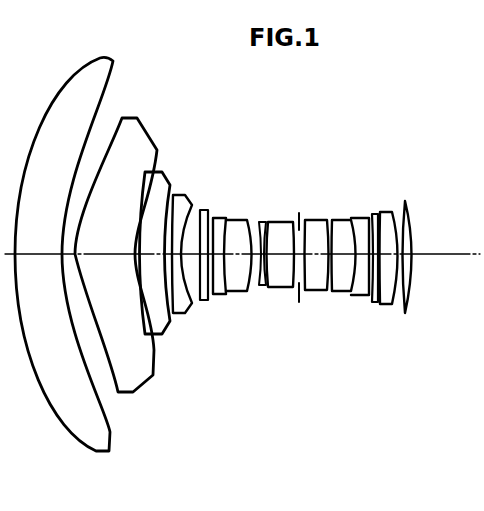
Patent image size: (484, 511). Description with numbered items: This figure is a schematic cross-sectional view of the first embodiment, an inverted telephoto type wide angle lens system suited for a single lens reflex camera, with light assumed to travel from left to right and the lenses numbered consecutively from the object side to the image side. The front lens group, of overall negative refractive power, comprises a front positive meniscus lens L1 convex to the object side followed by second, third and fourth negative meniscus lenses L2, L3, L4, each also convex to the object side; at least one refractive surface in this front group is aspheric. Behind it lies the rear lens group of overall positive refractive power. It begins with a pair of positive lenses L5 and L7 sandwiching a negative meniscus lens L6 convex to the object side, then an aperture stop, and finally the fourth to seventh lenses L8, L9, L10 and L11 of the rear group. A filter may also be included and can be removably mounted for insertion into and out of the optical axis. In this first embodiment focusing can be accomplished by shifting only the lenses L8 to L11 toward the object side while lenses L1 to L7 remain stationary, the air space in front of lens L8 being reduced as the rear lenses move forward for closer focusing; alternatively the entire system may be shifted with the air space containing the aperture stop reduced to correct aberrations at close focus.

The front positive meniscus lens L1 is at (104, 64).
The second negative meniscus lens L2 is at (140, 128).
The third negative meniscus lens L3 is at (158, 178).
The fourth negative meniscus lens L4 is at (185, 200).
The positive lens L5 is at (213, 211).
The negative meniscus lens L6 is at (268, 222).
The positive lens L7 is at (299, 210).
The fourth lens of the rear group L8 is at (311, 222).
The fifth lens of the rear group L9 is at (333, 215).
The sixth lens of the rear group L10 is at (373, 208).
The seventh lens of the rear group L11 is at (421, 227).